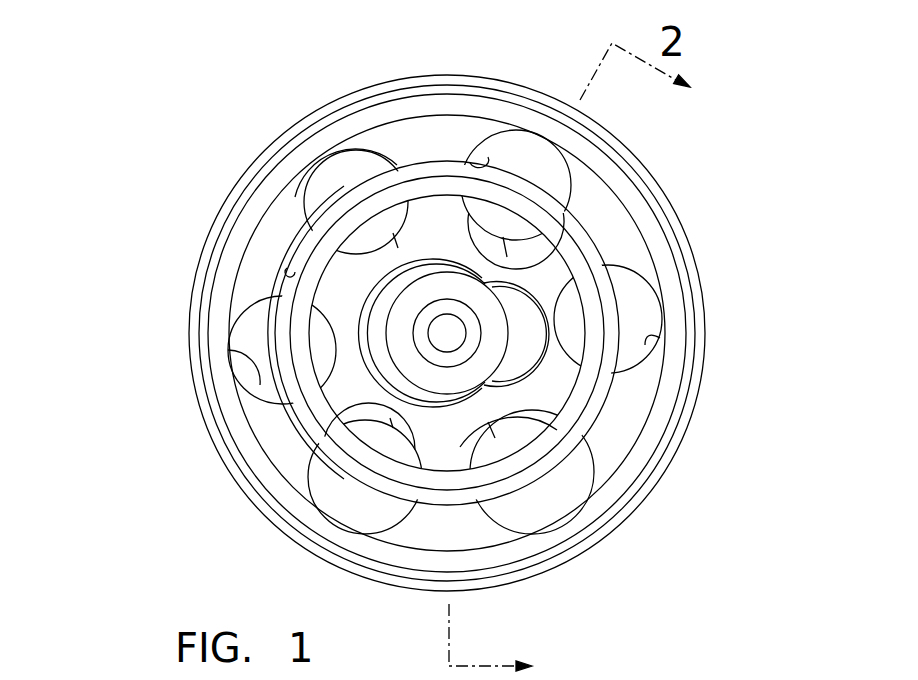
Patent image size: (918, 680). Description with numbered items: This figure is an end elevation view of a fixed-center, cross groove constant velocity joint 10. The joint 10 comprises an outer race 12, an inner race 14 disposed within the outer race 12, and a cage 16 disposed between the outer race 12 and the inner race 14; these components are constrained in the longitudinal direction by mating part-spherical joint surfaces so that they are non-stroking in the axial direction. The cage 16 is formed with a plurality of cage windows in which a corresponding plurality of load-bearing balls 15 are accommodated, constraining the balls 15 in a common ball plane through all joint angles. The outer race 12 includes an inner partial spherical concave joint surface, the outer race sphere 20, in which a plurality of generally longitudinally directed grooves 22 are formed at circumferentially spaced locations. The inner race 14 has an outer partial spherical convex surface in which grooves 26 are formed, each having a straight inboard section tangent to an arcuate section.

The constant velocity joint 10 is at (286, 44).
The outer race 12 is at (245, 487).
The inner race 14 is at (540, 405).
The load-bearing balls 15 is at (327, 183).
The cage 16 is at (607, 315).
The outer race sphere 20 is at (287, 268).
The grooves 22 is at (462, 168).
The grooves 26 is at (387, 242).